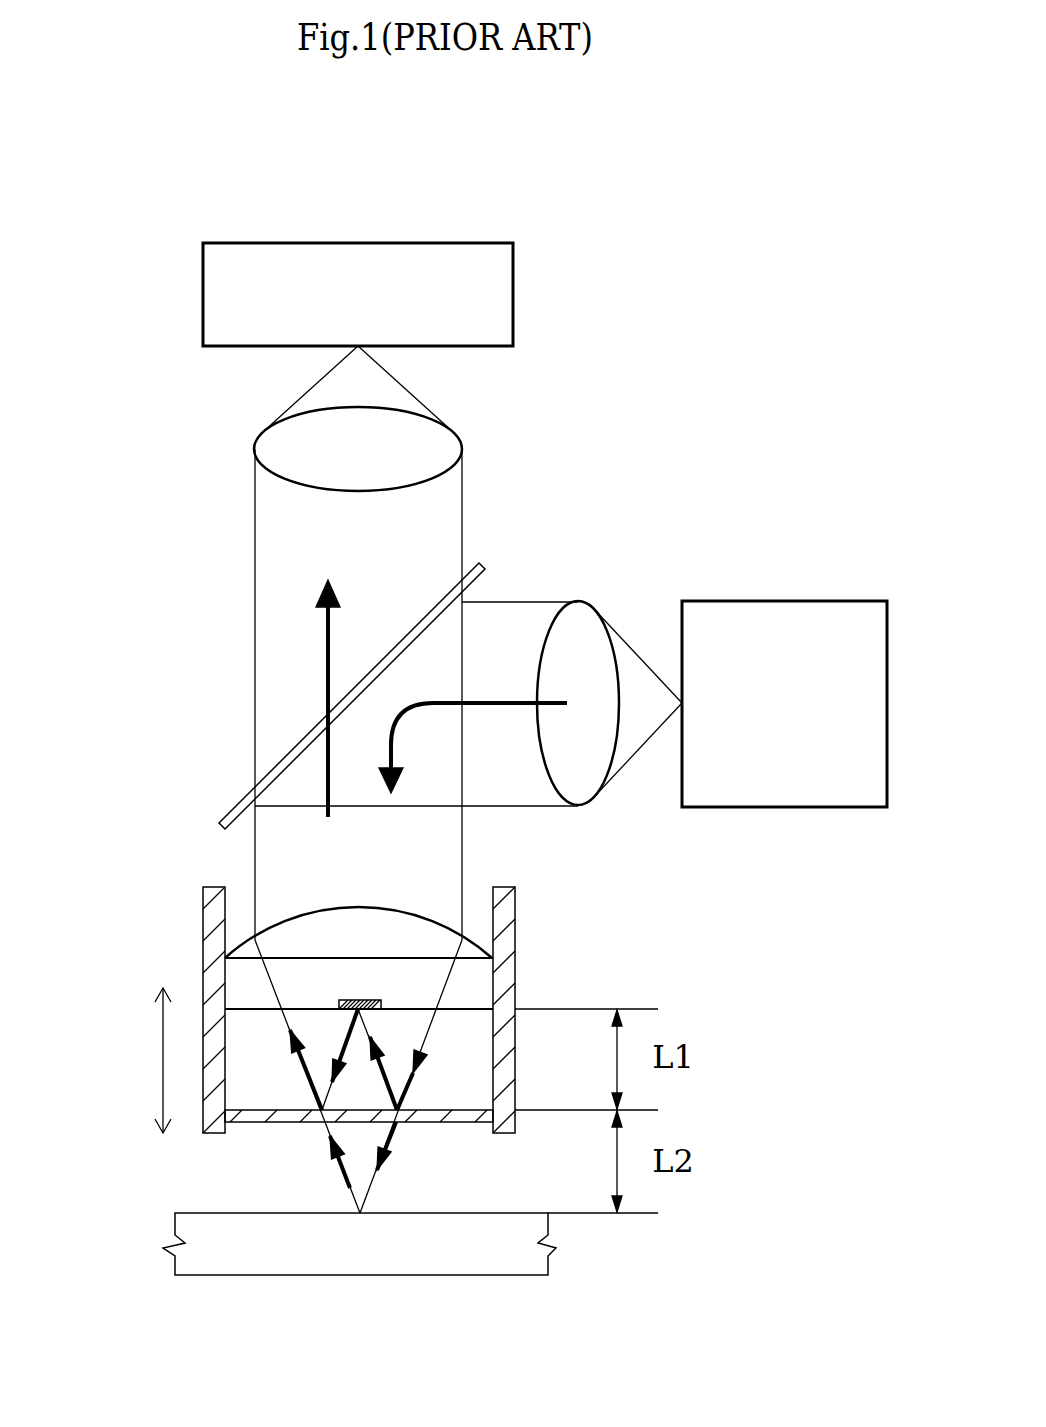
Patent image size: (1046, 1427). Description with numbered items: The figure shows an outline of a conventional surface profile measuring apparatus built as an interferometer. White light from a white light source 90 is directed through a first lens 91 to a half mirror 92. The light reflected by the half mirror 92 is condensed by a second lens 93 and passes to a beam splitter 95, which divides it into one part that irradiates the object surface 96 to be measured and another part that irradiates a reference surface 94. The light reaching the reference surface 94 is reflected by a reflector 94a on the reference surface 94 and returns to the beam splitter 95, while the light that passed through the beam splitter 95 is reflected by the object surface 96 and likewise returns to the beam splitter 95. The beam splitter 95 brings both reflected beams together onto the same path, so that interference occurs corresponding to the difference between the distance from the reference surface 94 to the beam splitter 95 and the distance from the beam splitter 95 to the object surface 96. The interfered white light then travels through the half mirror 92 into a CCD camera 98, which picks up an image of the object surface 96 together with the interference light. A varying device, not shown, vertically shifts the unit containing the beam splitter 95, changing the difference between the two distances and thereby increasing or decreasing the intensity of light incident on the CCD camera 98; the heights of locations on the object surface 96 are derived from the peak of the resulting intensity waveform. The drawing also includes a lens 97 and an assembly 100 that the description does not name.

The white light source 90 is at (775, 601).
The first lens 91 is at (580, 602).
The half mirror 92 is at (480, 565).
The second lens 93 is at (423, 915).
The reference surface 94 is at (453, 1012).
The reflector 94a is at (345, 985).
The beam splitter 95 is at (462, 1125).
The object surface 96 is at (205, 1213).
The imaging lens 97 is at (462, 440).
The CCD camera 98 is at (513, 300).
The optical measuring device 100 is at (190, 937).